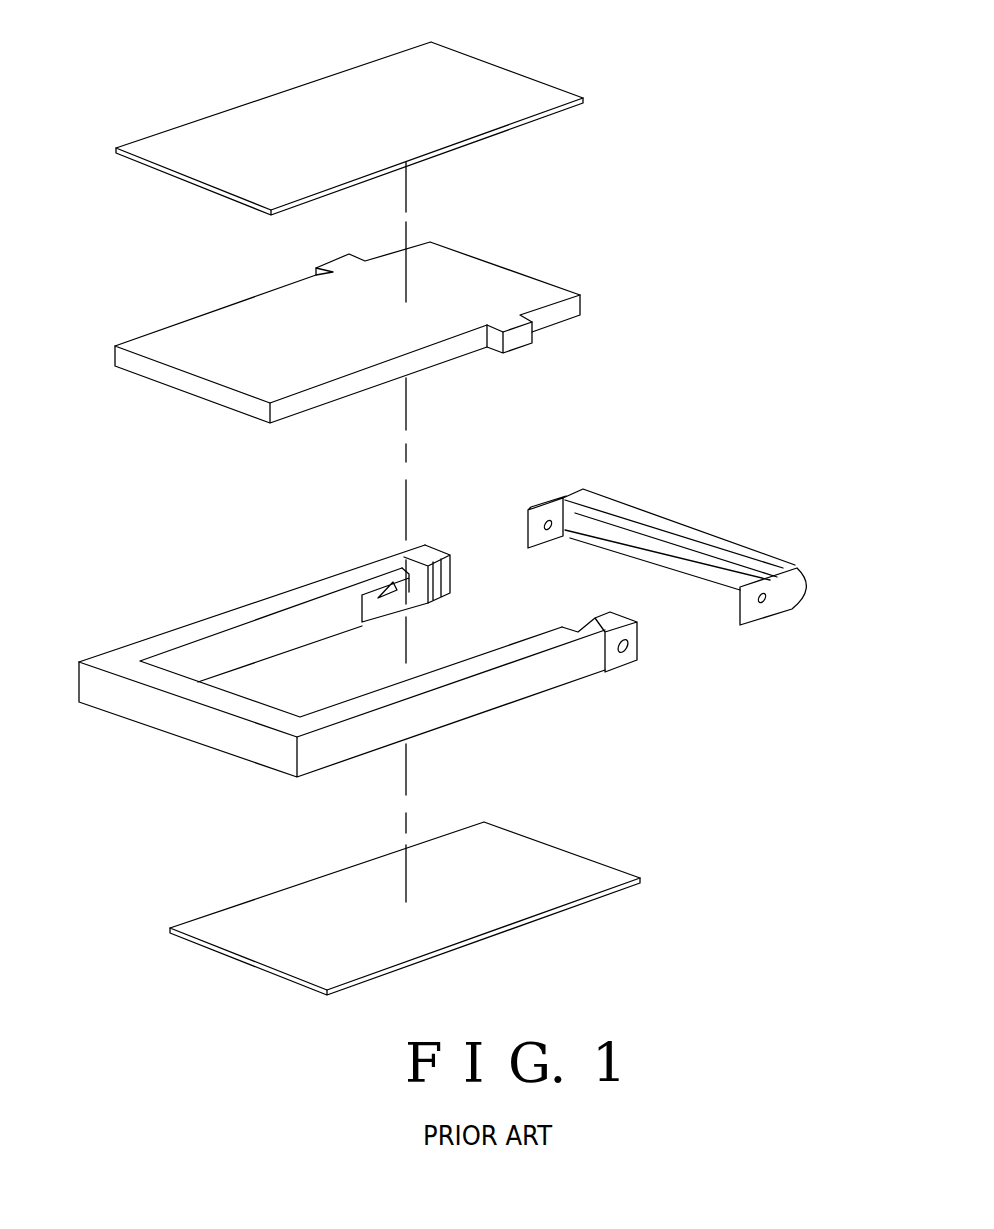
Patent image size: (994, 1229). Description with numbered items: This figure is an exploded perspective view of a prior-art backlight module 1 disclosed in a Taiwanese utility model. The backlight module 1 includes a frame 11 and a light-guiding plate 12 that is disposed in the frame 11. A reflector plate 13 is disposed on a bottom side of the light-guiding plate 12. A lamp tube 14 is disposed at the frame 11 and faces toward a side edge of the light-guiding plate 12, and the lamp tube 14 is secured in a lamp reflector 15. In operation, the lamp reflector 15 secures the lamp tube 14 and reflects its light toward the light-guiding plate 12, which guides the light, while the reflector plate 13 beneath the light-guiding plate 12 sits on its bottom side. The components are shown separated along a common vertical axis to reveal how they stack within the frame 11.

The backlight module 1 is at (706, 128).
The frame 11 is at (530, 683).
The light-guiding plate 12 is at (492, 281).
The reflector plate 13 is at (473, 920).
The lamp tube 14 is at (683, 555).
The lamp reflector 15 is at (790, 597).